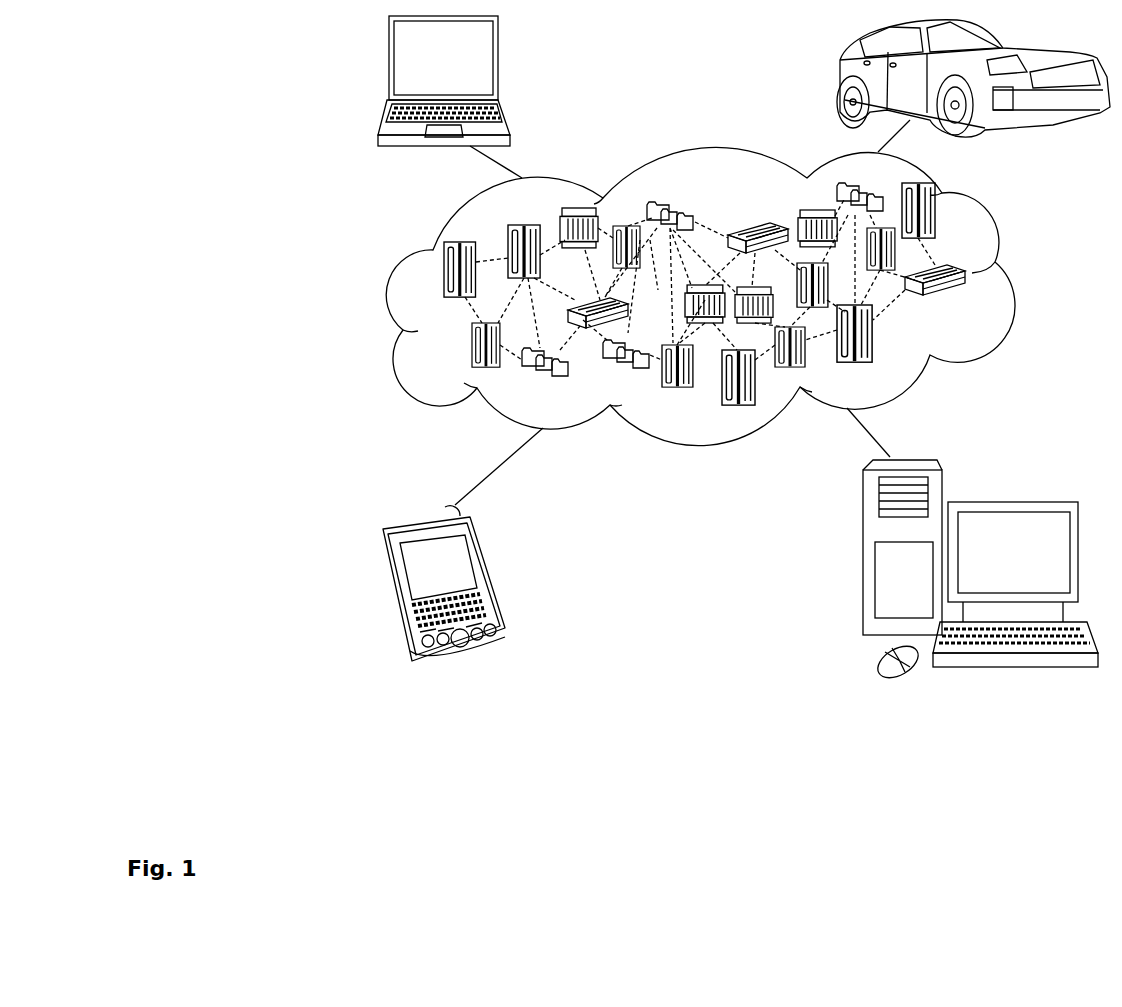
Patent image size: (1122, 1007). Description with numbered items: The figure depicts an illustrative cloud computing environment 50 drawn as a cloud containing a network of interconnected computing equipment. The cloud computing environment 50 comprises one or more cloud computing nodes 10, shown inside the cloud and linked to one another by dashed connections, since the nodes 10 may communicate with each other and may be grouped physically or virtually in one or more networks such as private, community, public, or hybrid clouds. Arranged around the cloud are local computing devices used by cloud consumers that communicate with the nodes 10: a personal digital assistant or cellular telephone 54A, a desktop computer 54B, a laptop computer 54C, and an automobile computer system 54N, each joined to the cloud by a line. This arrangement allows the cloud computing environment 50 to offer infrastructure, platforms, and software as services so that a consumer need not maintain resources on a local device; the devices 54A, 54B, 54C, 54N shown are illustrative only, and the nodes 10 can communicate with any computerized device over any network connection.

The cloud computing nodes 10 is at (970, 302).
The cloud computing environment 50 is at (1017, 275).
The personal digital assistant (PDA) or cellular telephone 54A is at (492, 577).
The desktop computer 54B is at (1012, 502).
The laptop computer 54C is at (498, 65).
The automobile computer system 54N is at (840, 78).